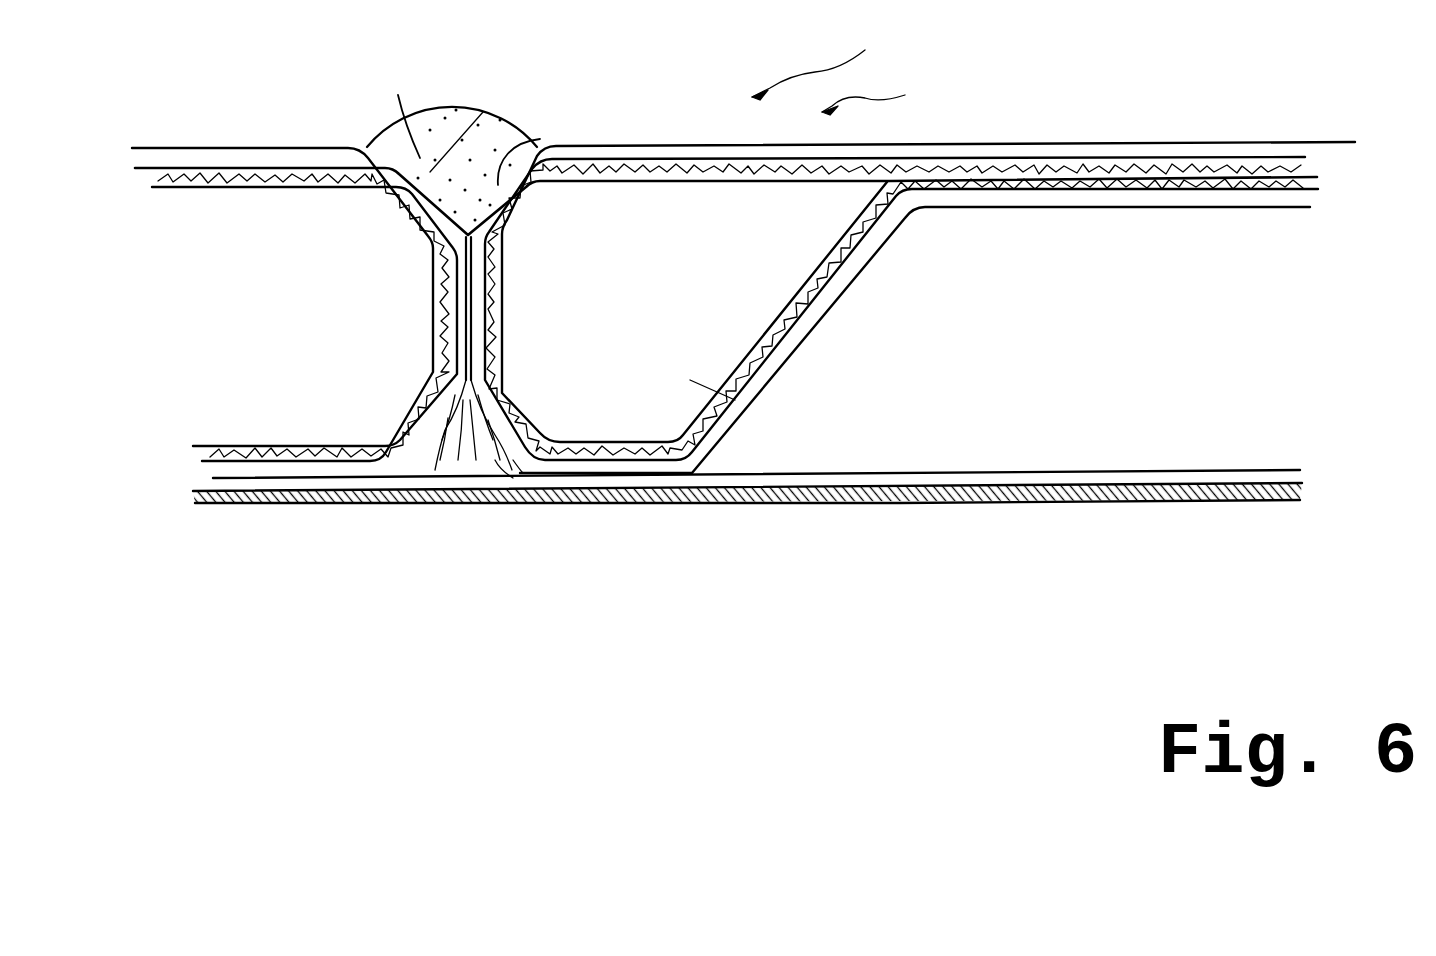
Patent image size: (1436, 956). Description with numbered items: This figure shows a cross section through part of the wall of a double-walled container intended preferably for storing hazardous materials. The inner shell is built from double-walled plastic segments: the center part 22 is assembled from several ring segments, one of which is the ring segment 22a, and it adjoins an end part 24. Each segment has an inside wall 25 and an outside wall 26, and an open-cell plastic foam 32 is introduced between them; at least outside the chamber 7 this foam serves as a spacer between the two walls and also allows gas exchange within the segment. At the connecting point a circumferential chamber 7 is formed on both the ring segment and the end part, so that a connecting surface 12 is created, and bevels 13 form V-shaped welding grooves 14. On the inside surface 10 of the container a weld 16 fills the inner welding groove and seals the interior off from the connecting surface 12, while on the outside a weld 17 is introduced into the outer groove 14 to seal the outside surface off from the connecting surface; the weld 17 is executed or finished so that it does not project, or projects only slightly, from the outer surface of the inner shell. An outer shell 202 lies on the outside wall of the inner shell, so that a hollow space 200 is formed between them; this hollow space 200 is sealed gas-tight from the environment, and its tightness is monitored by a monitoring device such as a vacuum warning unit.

The chamber 7 is at (262, 422).
The inside surface 10 is at (1043, 141).
The connecting surface 12 is at (455, 304).
The bevels 13 is at (512, 527).
The welding groove 14 is at (428, 168).
The weld 16 is at (490, 103).
The weld 17 is at (513, 478).
The center part 22 is at (833, 51).
The ring segment 22a is at (895, 84).
The end part 24 is at (222, 148).
The inside wall 25 is at (1162, 148).
The outside wall 26 is at (793, 337).
The open-cell plastic foam 32 is at (394, 420).
The hollow space 200 is at (1287, 471).
The outer shell 202 is at (1260, 495).